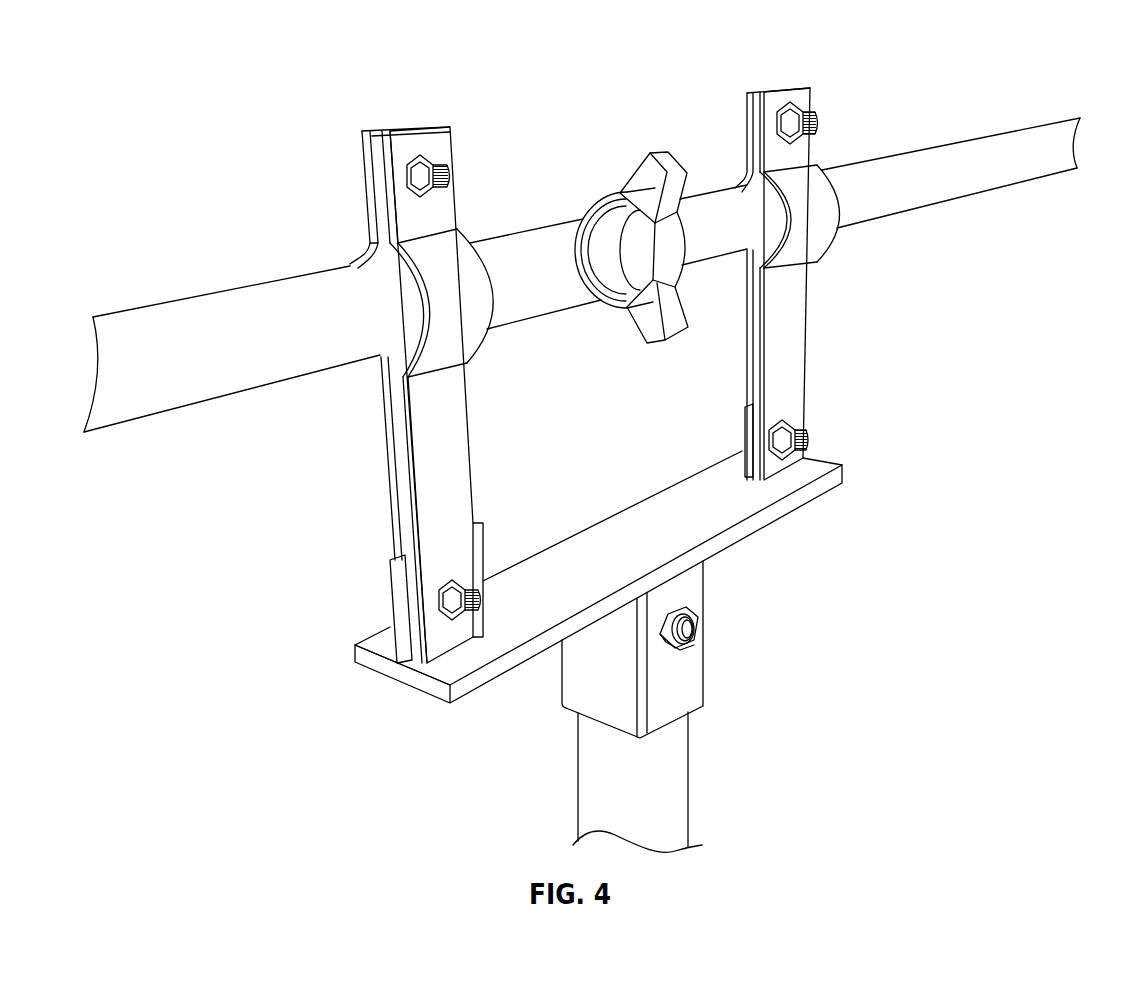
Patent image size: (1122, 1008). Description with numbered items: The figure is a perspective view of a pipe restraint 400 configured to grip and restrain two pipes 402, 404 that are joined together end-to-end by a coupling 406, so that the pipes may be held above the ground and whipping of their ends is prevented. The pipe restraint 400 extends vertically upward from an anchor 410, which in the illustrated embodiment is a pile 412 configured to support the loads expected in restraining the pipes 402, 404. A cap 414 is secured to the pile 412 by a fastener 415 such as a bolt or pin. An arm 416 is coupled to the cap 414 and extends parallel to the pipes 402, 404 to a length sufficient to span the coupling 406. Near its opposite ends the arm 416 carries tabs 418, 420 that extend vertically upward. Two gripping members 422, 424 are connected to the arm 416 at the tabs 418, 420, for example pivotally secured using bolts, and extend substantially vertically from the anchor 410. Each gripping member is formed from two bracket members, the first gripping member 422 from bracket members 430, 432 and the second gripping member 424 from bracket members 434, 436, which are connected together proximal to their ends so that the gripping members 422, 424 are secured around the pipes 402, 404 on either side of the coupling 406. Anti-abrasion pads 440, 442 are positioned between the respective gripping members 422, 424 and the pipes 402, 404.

The pipe restraint 400 is at (140, 46).
The pipe 402 is at (197, 307).
The pipe 404 is at (893, 168).
The coupling 406 is at (643, 177).
The anchor 410 is at (770, 772).
The pile 412 is at (672, 762).
The cap 414 is at (695, 672).
The fastener 415 is at (698, 632).
The arm 416 is at (792, 498).
The tab 418 is at (407, 590).
The tab 420 is at (743, 433).
The gripping member 422 is at (453, 438).
The gripping member 424 is at (792, 323).
The bracket member 430 is at (388, 452).
The bracket member 432 is at (408, 513).
The bracket member 434 is at (747, 328).
The bracket member 436 is at (750, 375).
The anti-abrasion pad 440 is at (362, 248).
The anti-abrasion pad 442 is at (742, 178).